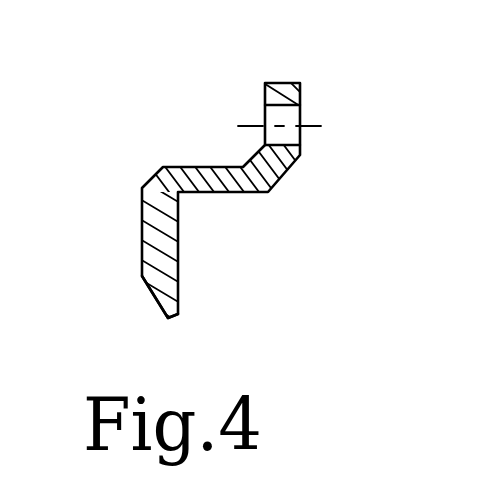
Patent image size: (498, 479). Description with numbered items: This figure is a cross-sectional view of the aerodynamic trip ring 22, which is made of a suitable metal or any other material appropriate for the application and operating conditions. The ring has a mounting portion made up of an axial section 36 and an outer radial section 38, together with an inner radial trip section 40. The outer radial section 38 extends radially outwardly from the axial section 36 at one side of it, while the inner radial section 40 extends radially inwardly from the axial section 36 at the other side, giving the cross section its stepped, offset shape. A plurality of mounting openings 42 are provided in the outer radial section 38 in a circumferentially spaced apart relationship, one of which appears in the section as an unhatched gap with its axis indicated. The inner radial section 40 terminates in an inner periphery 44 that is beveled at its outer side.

The aerodynamic trip ring 22 is at (313, 196).
The axial section 36 is at (203, 167).
The outer radial section 38 is at (301, 92).
The inner radial trip section 40 is at (180, 272).
The mounting openings 42 is at (302, 110).
The inner periphery 44 is at (153, 298).